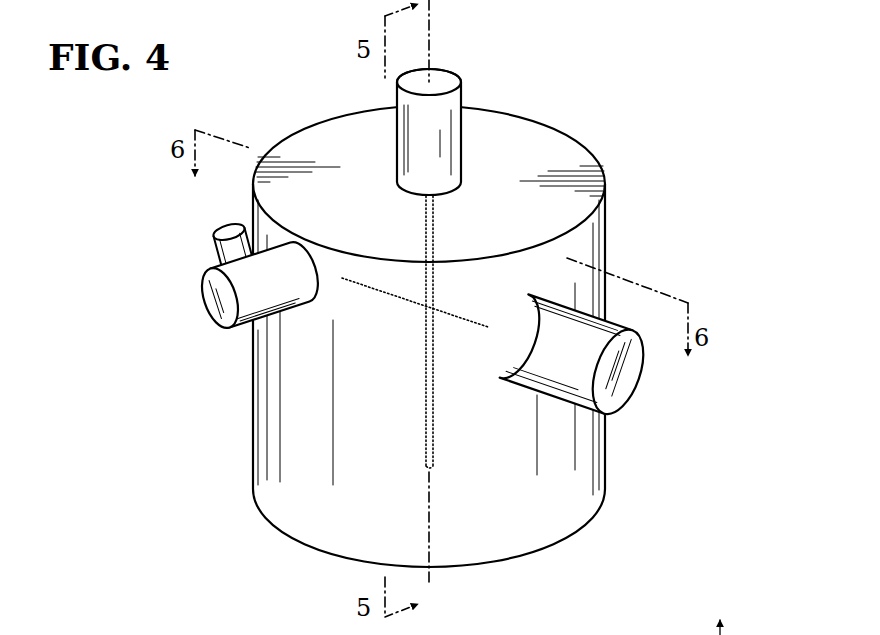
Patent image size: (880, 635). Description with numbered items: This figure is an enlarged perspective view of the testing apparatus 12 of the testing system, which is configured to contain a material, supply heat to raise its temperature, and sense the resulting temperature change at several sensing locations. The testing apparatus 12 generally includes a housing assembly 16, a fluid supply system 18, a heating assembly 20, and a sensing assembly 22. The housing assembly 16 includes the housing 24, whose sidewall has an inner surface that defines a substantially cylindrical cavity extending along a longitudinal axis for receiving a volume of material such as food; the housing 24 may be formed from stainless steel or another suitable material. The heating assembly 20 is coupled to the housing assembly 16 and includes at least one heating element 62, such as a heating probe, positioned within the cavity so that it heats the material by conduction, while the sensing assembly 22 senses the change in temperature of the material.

The testing apparatus 12 is at (455, 285).
The housing assembly 16 is at (455, 313).
The fluid supply system 18 is at (243, 330).
The heating assembly 20 is at (453, 72).
The sensing assembly 22 is at (636, 377).
The housing 24 is at (603, 164).
The heating element 62 is at (436, 226).